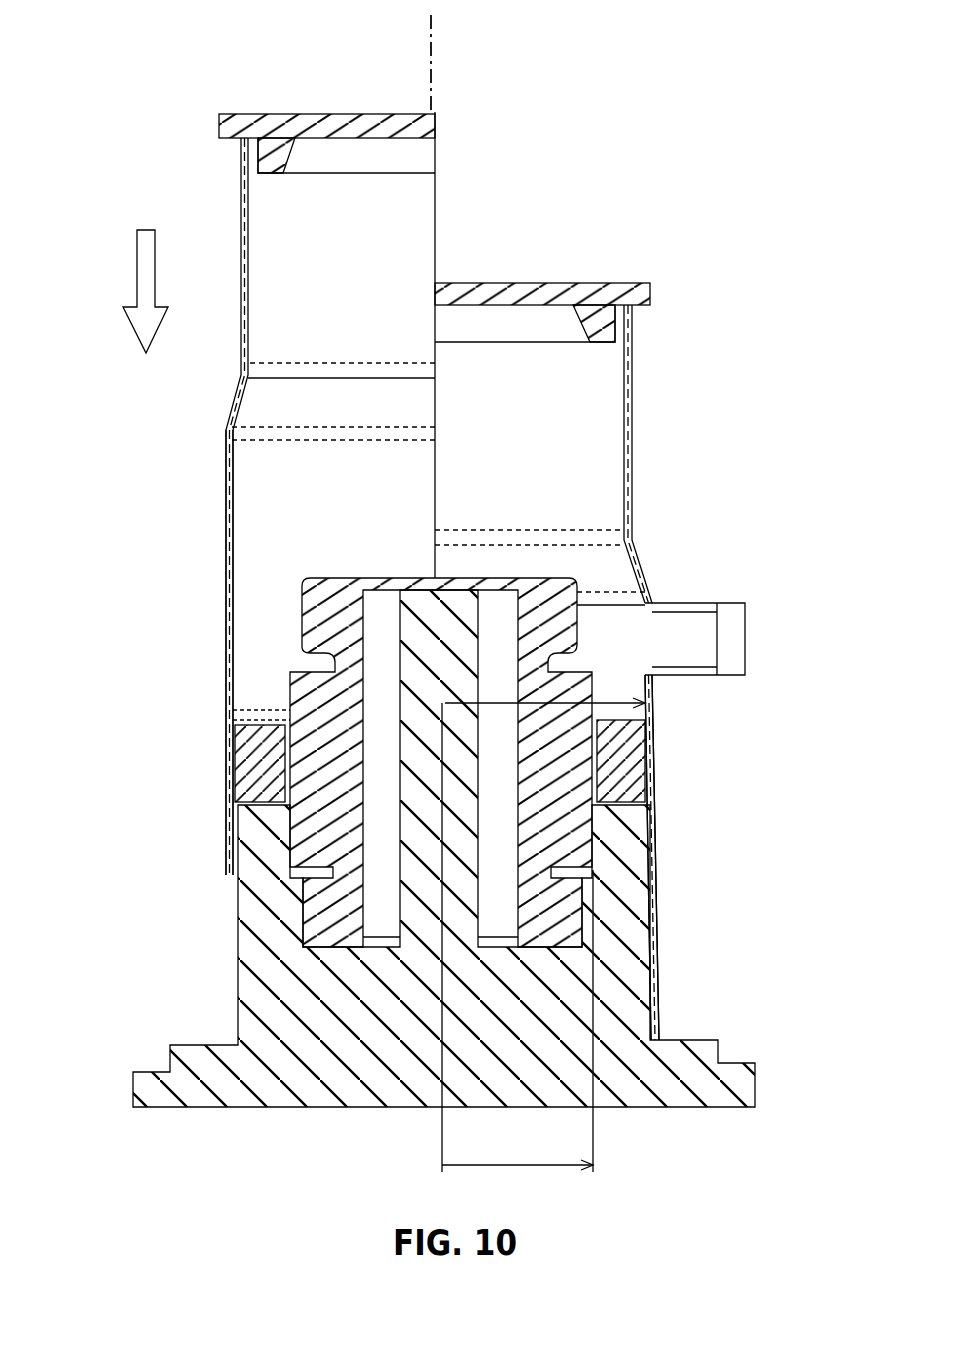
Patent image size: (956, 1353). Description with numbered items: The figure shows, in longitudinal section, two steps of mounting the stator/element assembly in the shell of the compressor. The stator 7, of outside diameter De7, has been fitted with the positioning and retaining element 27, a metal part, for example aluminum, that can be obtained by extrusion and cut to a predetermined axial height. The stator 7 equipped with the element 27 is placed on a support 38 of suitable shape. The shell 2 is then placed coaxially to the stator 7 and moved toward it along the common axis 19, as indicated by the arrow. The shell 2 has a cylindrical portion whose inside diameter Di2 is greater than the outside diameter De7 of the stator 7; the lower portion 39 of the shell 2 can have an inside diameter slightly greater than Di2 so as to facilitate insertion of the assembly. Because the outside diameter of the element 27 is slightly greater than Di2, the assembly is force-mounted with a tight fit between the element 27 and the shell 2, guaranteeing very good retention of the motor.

The longitudinal axis 19 is at (431, 38).
The shell 2 is at (241, 177).
The stator 7 is at (323, 618).
The positioning and retaining element 27 is at (246, 758).
The support 38 is at (756, 1081).
The lower portion of the shell 39 is at (226, 850).
The inside diameter of the cylindrical portion of the shell Di2 is at (612, 700).
The outside diameter of the stator De7 is at (517, 937).